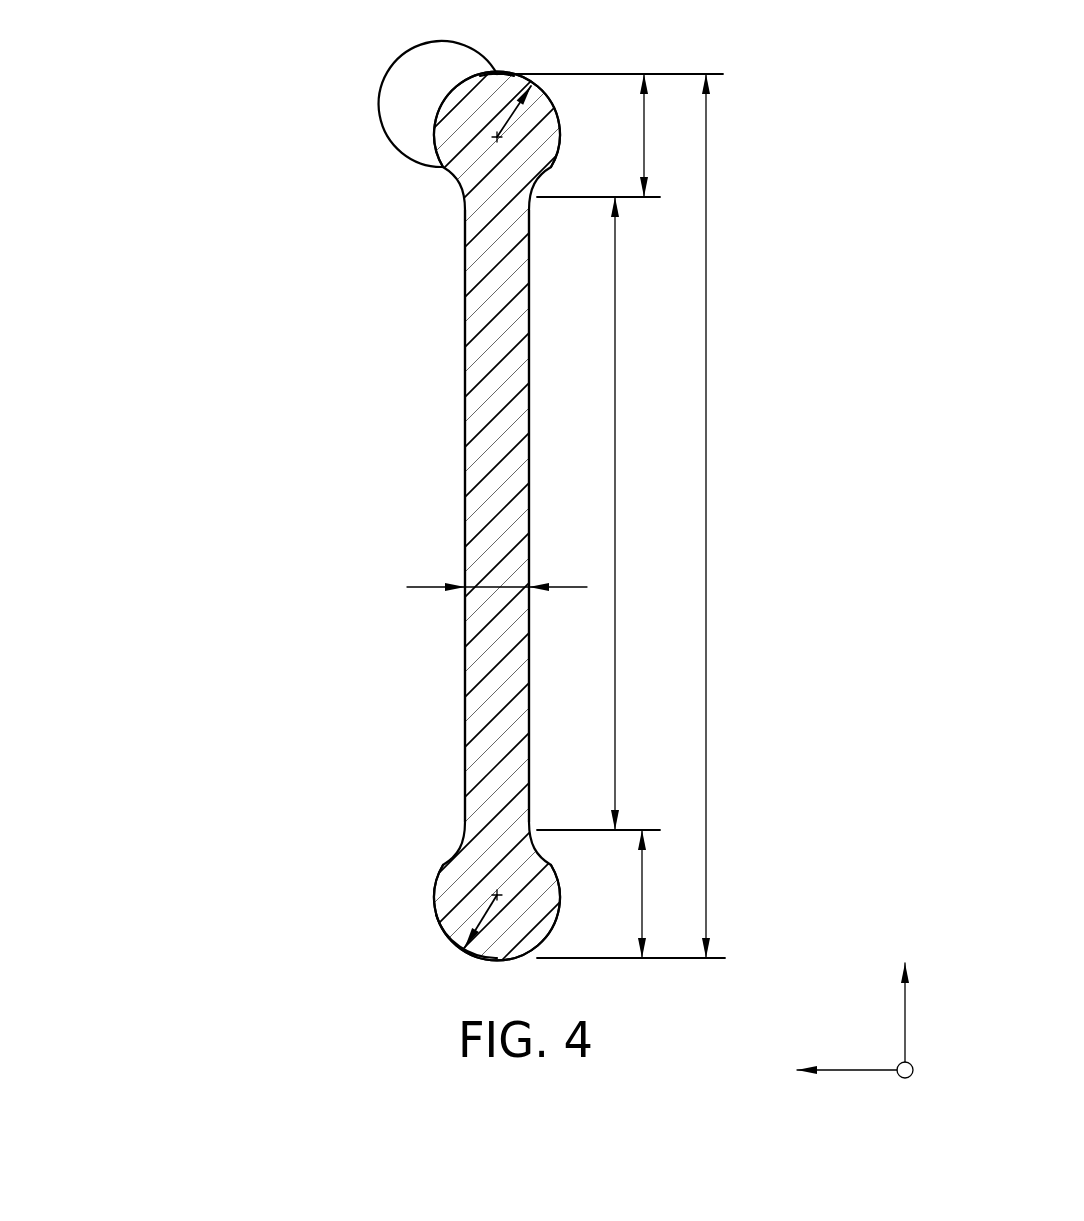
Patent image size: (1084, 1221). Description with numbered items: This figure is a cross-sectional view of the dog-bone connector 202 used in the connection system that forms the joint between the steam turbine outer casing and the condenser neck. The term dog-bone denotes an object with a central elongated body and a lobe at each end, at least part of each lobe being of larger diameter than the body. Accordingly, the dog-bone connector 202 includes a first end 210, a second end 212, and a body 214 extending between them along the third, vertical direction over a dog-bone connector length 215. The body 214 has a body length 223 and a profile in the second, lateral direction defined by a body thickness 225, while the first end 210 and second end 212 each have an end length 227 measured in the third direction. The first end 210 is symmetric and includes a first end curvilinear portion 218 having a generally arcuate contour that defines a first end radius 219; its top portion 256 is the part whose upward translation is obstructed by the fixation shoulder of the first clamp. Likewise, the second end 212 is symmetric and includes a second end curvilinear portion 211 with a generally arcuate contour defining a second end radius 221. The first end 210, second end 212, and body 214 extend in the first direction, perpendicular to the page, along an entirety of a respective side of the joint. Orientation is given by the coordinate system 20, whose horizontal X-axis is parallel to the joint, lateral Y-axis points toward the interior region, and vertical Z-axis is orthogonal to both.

The dog-bone connector 202 is at (170, 157).
The first end 210 is at (437, 132).
The first end curvilinear portion 218 is at (450, 105).
The top portion 256 is at (497, 74).
The first end radius 219 is at (510, 122).
The body 214 is at (466, 355).
The second end 212 is at (442, 867).
The second end radius 221 is at (482, 925).
The second end curvilinear portion 211 is at (453, 937).
The end length 227 is at (645, 147).
The body length 223 is at (615, 343).
The dog-bone connector length 215 is at (707, 317).
The body thickness 225 is at (496, 587).
The coordinate system 20 is at (845, 1008).